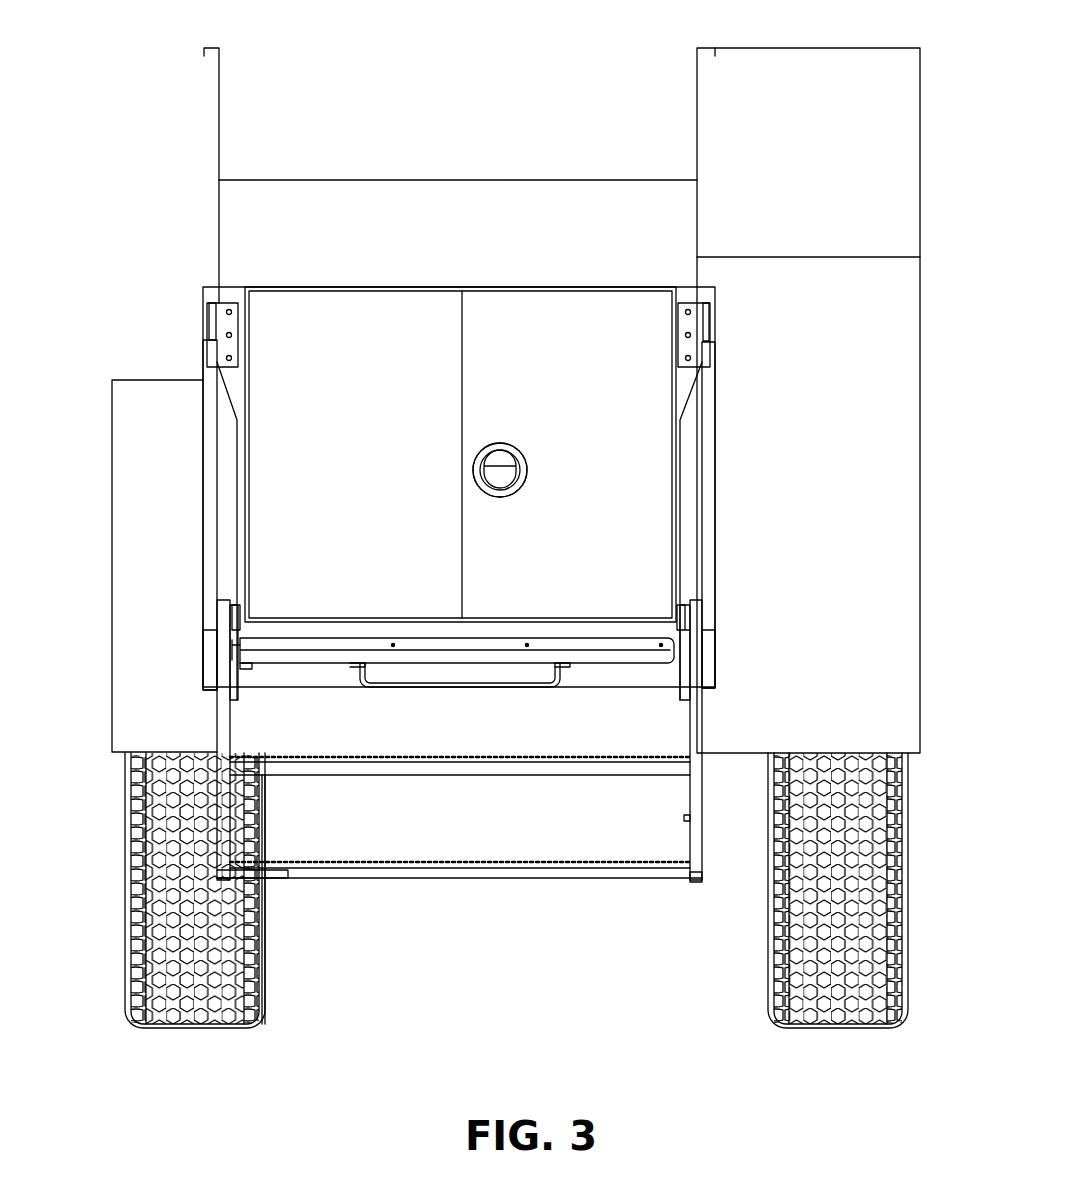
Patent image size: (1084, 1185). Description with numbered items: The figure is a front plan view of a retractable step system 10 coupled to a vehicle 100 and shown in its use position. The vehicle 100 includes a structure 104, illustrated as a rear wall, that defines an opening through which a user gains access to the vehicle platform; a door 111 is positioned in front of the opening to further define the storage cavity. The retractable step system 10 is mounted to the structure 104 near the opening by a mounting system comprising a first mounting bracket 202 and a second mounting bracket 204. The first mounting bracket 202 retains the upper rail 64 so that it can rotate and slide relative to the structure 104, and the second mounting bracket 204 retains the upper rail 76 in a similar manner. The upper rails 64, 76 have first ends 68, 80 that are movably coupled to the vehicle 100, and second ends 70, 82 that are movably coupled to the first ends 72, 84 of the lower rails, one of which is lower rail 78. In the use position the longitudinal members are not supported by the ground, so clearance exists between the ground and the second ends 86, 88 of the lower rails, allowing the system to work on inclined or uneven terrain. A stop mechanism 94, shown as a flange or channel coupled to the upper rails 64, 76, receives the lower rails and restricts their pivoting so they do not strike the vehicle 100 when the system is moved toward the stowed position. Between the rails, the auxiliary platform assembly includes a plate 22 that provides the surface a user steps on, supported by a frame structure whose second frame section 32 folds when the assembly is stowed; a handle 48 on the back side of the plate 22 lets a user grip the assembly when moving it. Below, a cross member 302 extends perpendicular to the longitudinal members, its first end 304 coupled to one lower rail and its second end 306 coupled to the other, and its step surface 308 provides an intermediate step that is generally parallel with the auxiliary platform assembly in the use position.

The vehicle 100 is at (145, 128).
The structure 104 is at (421, 195).
The first mounting bracket 202 is at (232, 300).
The second mounting bracket 204 is at (681, 302).
The first end of upper rail 68 is at (205, 335).
The first end of upper rail 80 is at (715, 360).
The upper rail 64 is at (205, 425).
The upper rail 76 is at (712, 446).
The stop mechanism 94 is at (238, 415).
The door 111 is at (576, 370).
The retractable step system 10 is at (755, 520).
The first end of lower rail 72 is at (240, 620).
The first end of lower rail 84 is at (680, 636).
The plate 22 is at (358, 626).
The second frame section 32 is at (250, 665).
The handle 48 is at (470, 685).
The second end of upper rail 70 is at (208, 650).
The second end of upper rail 82 is at (712, 650).
The lower rail 78 is at (695, 752).
The second end of lower rail 86 is at (166, 860).
The second end of lower rail 88 is at (694, 848).
The step surface 308 is at (440, 858).
The cross member 302 is at (488, 880).
The first end of cross member 304 is at (290, 882).
The second end of cross member 306 is at (660, 882).